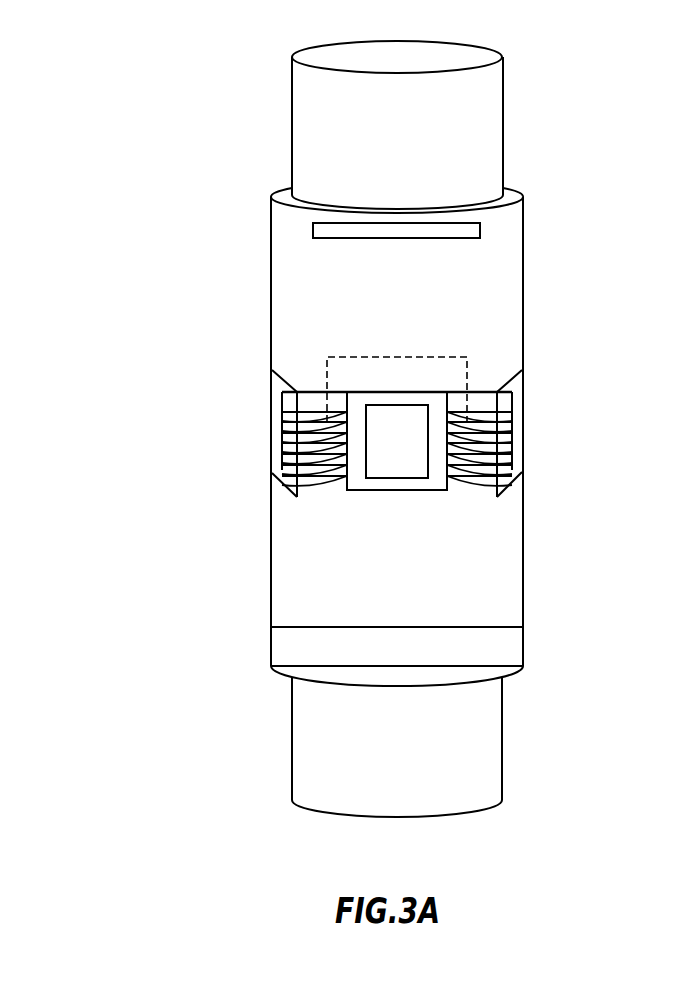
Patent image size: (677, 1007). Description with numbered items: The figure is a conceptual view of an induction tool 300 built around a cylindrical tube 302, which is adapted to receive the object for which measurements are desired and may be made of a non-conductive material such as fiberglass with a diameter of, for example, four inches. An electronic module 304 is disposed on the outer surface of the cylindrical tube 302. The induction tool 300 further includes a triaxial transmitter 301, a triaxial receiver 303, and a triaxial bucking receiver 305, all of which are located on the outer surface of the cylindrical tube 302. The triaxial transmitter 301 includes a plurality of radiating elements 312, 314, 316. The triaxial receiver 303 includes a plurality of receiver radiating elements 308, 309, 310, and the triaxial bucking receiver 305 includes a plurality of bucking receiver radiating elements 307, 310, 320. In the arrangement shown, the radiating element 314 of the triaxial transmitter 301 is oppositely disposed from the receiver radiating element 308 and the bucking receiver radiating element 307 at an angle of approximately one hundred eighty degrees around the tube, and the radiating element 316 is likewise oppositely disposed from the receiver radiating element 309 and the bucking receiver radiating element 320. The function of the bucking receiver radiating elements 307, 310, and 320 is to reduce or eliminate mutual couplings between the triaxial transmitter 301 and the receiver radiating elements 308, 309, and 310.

The induction tool 300 is at (205, 652).
The triaxial transmitter 301 is at (320, 342).
The cylindrical tube 302 is at (483, 607).
The triaxial receiver 303 is at (398, 500).
The electronic module 304 is at (482, 232).
The triaxial bucking receiver 305 is at (541, 425).
The bucking receiver radiating element 307 is at (428, 478).
The receiver radiating element 308 is at (415, 492).
The receiver radiating element 309 is at (529, 474).
The receiver radiating element 310 is at (307, 441).
The radiating element 312 is at (313, 481).
The radiating element 314 is at (427, 357).
The radiating element 316 is at (270, 433).
The bucking receiver radiating element 320 is at (525, 413).